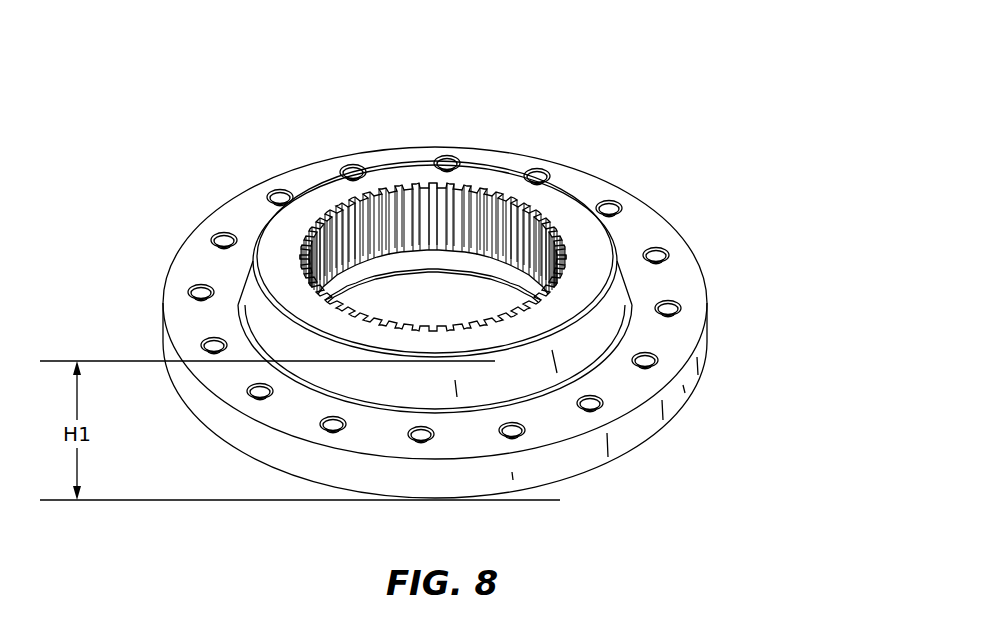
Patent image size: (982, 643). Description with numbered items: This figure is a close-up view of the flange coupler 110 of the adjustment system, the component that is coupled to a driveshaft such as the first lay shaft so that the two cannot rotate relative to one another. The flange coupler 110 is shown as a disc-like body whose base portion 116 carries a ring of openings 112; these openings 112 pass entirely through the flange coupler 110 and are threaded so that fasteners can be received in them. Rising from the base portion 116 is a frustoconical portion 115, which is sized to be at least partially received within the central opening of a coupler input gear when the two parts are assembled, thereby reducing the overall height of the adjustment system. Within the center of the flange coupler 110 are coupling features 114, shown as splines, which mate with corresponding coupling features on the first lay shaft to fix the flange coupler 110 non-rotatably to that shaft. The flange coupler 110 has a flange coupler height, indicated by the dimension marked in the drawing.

The flange coupler 110 is at (803, 361).
The openings 112 is at (433, 283).
The coupling features 114 is at (468, 200).
The frustoconical portion 115 is at (592, 337).
The base portion 116 is at (617, 397).